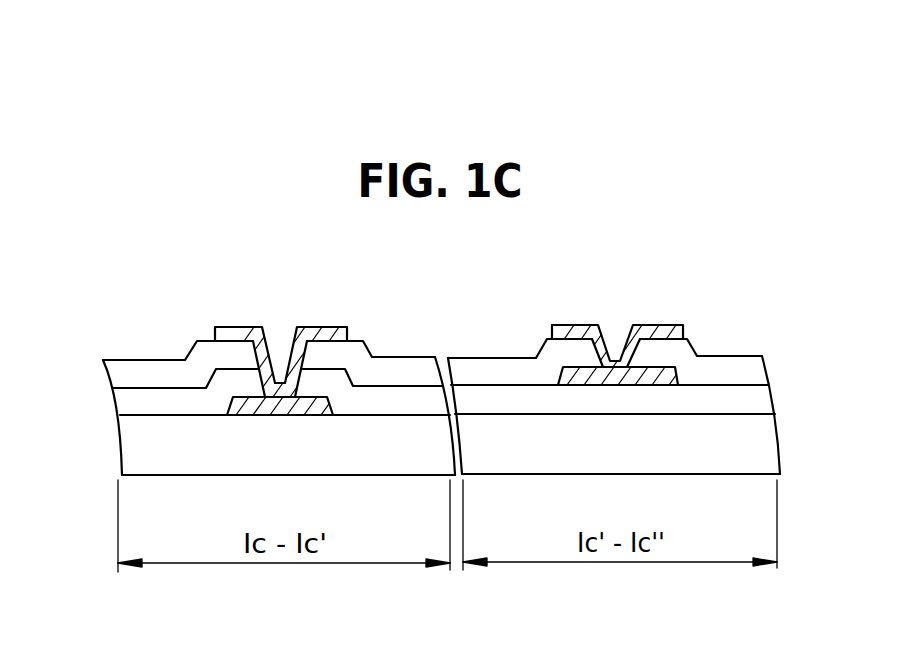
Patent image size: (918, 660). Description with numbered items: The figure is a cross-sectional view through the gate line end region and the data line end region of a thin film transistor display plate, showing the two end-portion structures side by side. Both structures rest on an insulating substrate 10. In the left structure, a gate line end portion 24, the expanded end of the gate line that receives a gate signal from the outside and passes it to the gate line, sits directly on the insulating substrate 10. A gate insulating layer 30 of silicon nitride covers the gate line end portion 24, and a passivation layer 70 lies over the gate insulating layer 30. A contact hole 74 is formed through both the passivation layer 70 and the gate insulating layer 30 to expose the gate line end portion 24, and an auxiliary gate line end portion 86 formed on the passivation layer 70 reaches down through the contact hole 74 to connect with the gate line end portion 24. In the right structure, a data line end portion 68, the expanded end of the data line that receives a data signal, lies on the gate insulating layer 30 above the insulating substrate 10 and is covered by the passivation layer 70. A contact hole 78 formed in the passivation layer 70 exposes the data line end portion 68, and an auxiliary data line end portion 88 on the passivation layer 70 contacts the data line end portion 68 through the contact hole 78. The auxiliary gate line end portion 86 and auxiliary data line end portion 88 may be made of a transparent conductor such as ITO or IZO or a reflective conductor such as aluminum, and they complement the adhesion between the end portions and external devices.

The insulating substrate 10 is at (145, 448).
The gate line end portion 24 is at (260, 405).
The gate insulating layer 30 is at (395, 402).
The data line end portion 68 is at (615, 382).
The passivation layer 70 is at (492, 372).
The contact hole 74 is at (273, 316).
The contact hole 78 is at (611, 302).
The auxiliary gate line end portion 86 is at (318, 332).
The auxiliary data line end portion 88 is at (653, 330).